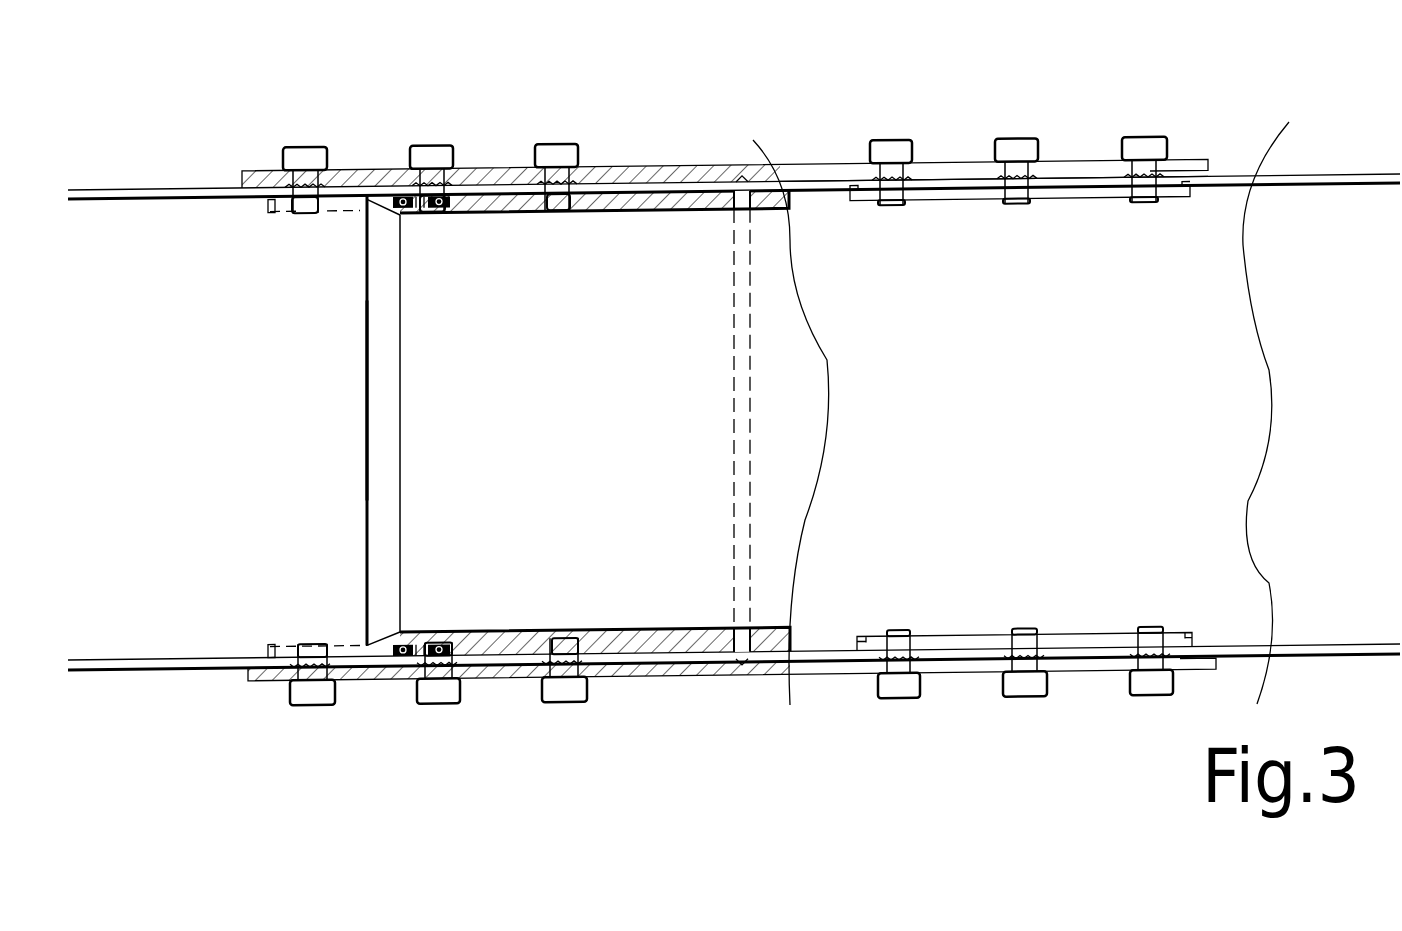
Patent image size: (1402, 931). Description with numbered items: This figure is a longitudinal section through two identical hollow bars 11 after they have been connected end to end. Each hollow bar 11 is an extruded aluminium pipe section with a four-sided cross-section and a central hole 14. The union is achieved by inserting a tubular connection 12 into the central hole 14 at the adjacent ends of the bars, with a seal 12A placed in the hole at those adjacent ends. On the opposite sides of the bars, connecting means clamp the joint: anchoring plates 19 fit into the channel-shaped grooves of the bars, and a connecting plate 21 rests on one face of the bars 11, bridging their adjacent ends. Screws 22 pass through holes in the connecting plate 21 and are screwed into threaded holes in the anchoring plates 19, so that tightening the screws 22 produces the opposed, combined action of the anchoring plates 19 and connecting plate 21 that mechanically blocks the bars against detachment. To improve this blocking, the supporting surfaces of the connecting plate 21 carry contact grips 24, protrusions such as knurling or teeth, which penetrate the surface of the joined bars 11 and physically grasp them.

The hollow bar 11 is at (172, 200).
The tubular connection 12 is at (687, 640).
The seal 12A is at (410, 655).
The central hole 14 is at (130, 410).
The anchoring plate 19 is at (283, 205).
The connecting plate 21 is at (505, 172).
The screw 22 is at (307, 153).
The contact grip 24 is at (1100, 197).